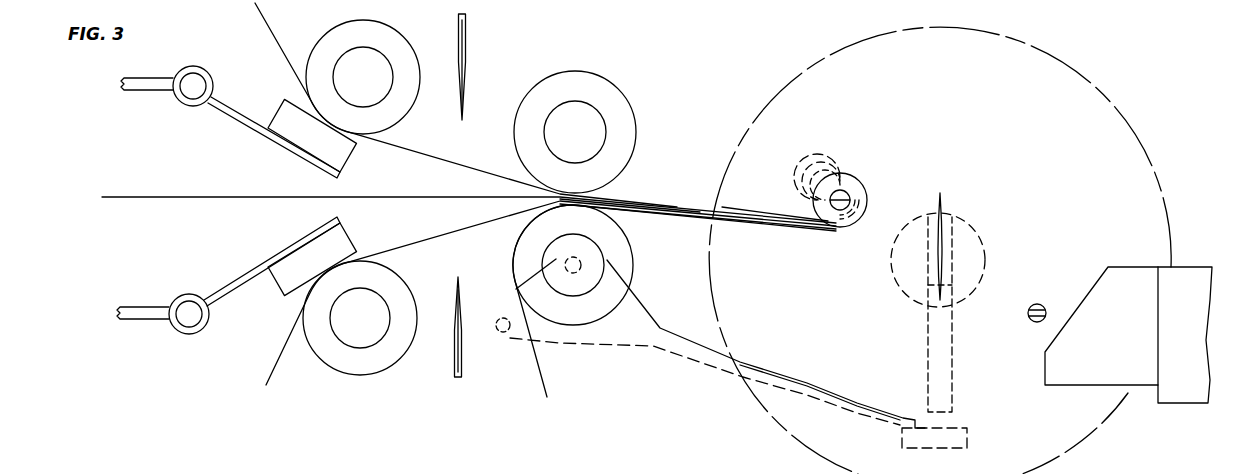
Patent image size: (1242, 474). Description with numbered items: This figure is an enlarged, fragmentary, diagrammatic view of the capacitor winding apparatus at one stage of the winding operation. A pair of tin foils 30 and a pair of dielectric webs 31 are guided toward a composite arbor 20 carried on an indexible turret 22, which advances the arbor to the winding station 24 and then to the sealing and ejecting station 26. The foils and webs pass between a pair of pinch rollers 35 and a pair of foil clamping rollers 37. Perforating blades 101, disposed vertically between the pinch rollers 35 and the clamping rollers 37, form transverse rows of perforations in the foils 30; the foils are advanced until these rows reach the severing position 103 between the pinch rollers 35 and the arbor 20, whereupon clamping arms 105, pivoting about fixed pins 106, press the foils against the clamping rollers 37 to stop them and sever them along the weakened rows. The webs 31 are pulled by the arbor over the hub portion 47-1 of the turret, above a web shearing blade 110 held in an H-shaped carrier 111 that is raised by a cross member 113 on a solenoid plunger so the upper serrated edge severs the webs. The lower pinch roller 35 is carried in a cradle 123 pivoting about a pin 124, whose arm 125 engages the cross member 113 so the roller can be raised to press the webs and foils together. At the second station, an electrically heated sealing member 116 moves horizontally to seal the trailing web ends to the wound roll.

The composite arbor 20 is at (843, 230).
The turret 22 is at (1142, 124).
The winding station 24 is at (845, 168).
The sealing and ejecting station 26 is at (1042, 300).
The tin foil 30 is at (424, 153).
The dielectric web 31 is at (228, 195).
The pinch roller 35 is at (598, 92).
The foil clamping roller 37 is at (337, 47).
The hub portion 47-1 is at (986, 250).
The perforating blade 101 is at (466, 62).
The severing position 103 is at (684, 190).
The clamping arm 105 is at (298, 132).
The fixed pin 106 is at (190, 100).
The web shearing blade 110 is at (943, 200).
The H-shaped carrier 111 is at (928, 355).
The cross member 113 is at (940, 452).
The sealing member 116 is at (1128, 290).
The cradle 123 is at (595, 346).
The pin 124 is at (497, 318).
The arm 125 is at (808, 398).